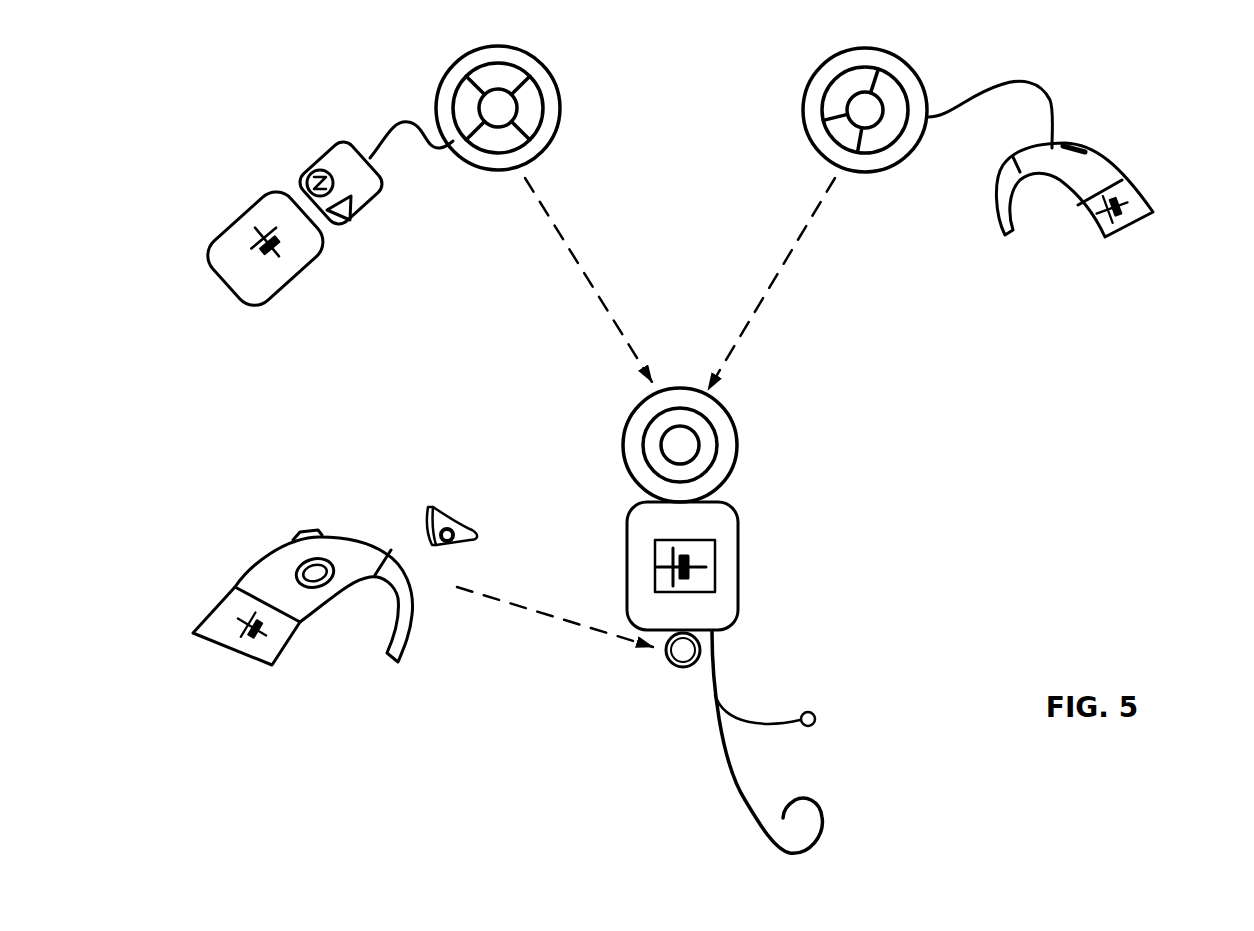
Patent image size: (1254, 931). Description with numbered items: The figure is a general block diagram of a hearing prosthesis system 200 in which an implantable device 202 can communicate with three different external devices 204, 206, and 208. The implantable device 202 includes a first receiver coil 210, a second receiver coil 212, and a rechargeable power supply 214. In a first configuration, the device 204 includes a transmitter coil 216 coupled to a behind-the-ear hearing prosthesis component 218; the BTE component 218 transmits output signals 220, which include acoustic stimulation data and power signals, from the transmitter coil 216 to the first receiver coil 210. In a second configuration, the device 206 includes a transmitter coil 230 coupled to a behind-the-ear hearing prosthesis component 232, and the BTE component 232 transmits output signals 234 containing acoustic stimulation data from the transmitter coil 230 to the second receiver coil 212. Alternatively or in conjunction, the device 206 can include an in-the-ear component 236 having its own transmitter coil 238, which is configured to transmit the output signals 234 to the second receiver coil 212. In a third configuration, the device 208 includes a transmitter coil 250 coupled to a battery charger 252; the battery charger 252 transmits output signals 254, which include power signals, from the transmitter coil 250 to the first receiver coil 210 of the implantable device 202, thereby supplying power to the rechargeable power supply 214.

The system 200 is at (711, 449).
The implantable device 202 is at (760, 620).
The external device 204 is at (1016, 183).
The external device 206 is at (303, 617).
The external device 208 is at (380, 212).
The first receiver coil 210 is at (737, 450).
The second receiver coil 212 is at (673, 668).
The rechargeable power supply 214 is at (715, 580).
The transmitter coil 216 is at (880, 170).
The behind-the-ear hearing prosthesis component 218 is at (1100, 240).
The output signals 220 is at (777, 278).
The transmitter coil 230 is at (332, 580).
The behind-the-ear hearing prosthesis component 232 is at (262, 562).
The output signals 234 is at (523, 607).
The in-the-ear component 236 is at (481, 496).
The transmitter coil 238 is at (445, 528).
The transmitter coil 250 is at (487, 170).
The battery charger 252 is at (282, 297).
The output signals 254 is at (588, 275).